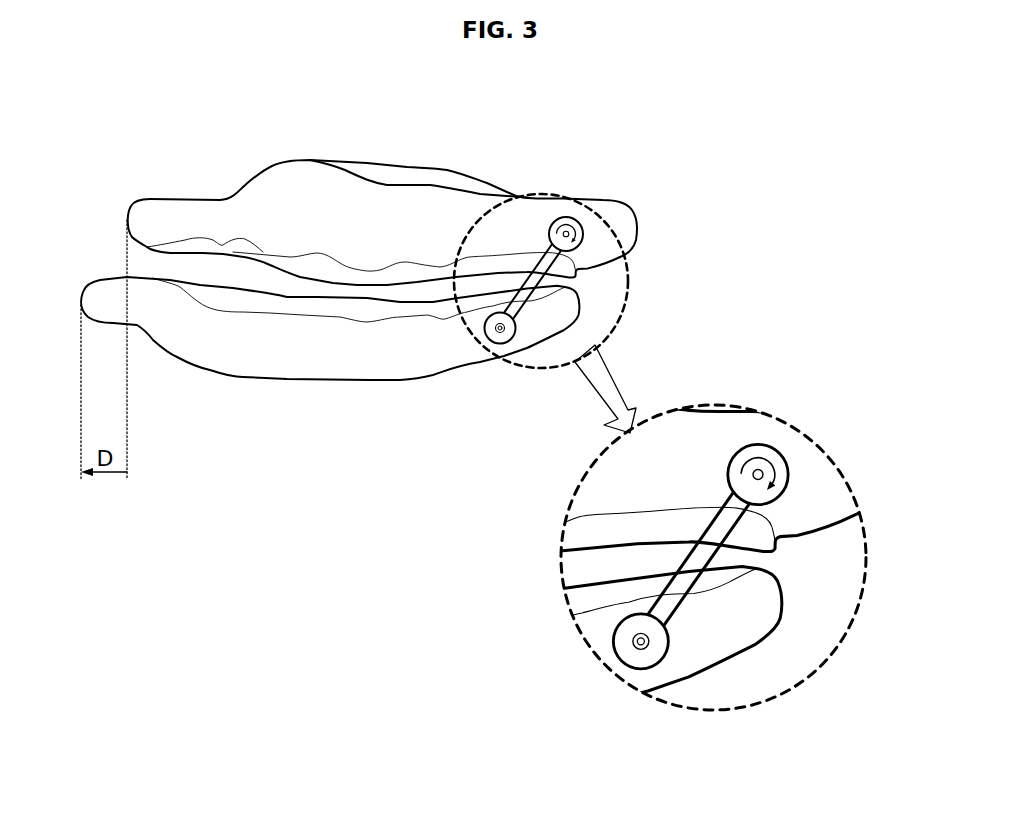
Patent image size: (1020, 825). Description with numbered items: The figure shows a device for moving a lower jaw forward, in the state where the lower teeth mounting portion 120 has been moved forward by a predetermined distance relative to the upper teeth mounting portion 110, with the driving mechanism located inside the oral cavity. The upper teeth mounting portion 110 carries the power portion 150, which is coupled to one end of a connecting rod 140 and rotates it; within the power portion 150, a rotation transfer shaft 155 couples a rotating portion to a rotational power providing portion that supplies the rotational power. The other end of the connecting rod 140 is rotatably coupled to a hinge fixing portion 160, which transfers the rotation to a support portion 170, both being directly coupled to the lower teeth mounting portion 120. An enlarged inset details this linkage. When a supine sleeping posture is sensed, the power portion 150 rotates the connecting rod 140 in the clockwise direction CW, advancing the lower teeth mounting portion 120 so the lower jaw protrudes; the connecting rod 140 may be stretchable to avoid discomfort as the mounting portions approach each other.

The upper teeth mounting portion 110 is at (390, 148).
The lower teeth mounting portion 120 is at (392, 396).
The connecting rod 140 is at (700, 568).
The power portion 150 is at (758, 446).
The rotation transfer shaft 155 is at (759, 481).
The hinge fixing portion 160 is at (649, 659).
The support portion 170 is at (633, 643).
The clockwise direction CW is at (773, 457).